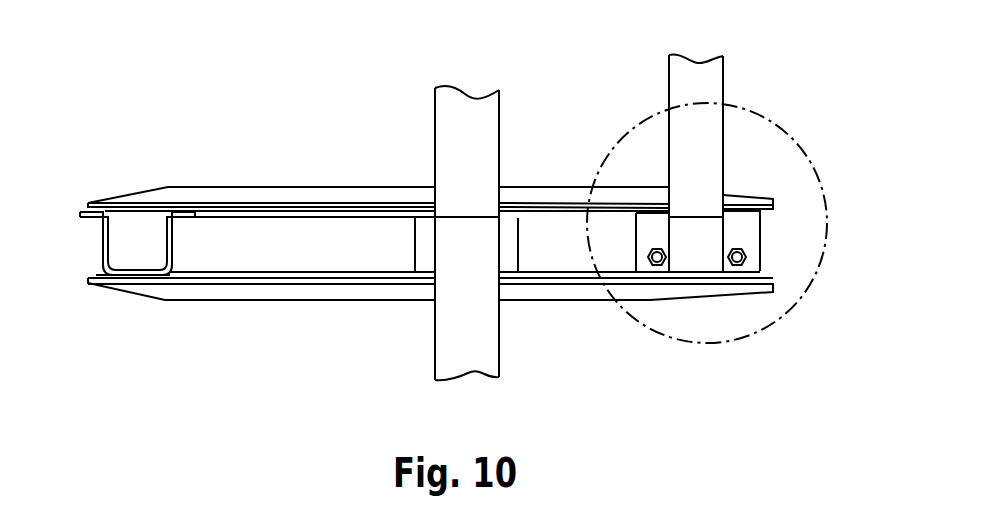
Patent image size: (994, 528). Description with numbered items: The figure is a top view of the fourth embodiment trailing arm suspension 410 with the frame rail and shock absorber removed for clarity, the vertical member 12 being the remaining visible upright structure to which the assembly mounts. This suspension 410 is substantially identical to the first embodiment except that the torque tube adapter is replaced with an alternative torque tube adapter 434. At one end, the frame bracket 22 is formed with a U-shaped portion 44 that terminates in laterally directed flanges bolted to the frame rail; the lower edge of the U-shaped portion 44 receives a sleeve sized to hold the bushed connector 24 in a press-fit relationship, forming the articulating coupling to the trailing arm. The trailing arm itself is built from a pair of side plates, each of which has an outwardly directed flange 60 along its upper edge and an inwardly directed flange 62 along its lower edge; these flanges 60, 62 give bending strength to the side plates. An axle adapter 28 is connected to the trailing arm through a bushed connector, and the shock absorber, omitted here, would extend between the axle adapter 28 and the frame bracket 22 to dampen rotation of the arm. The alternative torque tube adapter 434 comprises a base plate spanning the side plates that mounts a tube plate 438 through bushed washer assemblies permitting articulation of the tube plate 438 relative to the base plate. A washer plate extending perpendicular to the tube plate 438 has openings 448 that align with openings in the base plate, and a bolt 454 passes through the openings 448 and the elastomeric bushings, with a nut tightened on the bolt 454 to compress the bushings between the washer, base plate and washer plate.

The post 12 is at (445, 115).
The frame bracket 22 is at (102, 233).
The bushed connector 24 is at (96, 274).
The axle adapter 28 is at (431, 226).
The U-shaped portion 44 is at (725, 90).
The outwardly directed flange 60 is at (210, 187).
The inwardly directed flange 62 is at (258, 211).
The fourth embodiment trailing arm suspension 410 is at (595, 72).
The alternative torque tube adapter 434 is at (780, 220).
The tube plate 438 is at (765, 255).
The openings 448 is at (653, 267).
The bolt 454 is at (652, 260).